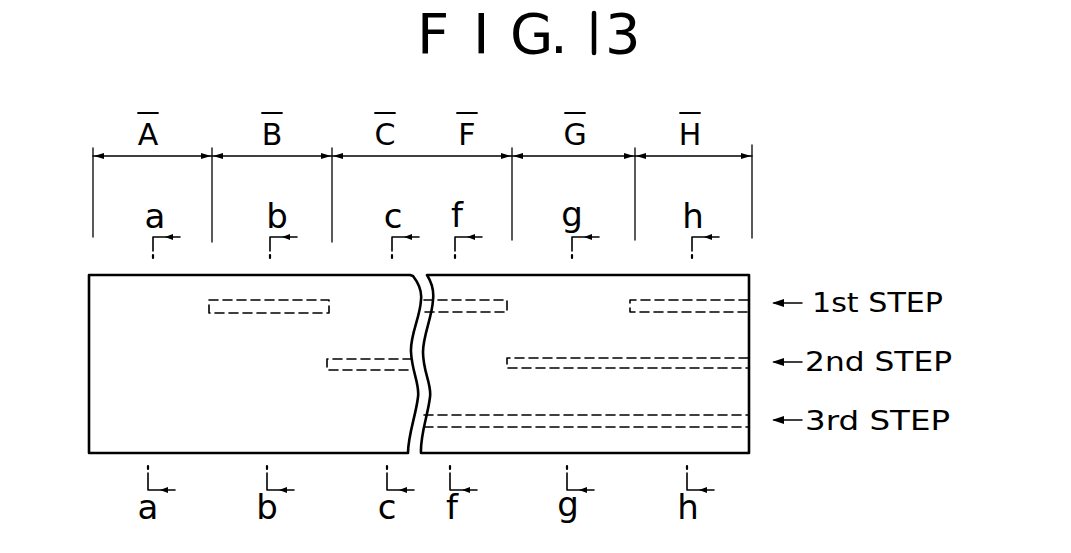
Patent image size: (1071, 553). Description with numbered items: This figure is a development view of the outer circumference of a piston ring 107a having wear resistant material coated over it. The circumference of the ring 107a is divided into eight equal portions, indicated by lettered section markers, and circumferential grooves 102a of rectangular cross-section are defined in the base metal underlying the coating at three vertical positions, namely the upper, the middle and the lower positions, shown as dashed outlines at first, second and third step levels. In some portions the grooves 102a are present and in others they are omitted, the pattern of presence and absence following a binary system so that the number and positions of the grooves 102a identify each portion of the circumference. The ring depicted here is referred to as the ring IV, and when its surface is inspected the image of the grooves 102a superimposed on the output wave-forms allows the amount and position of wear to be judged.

The ring 107a is at (119, 280).
The circumferential grooves 102a is at (700, 310).
The ring IV is at (125, 430).